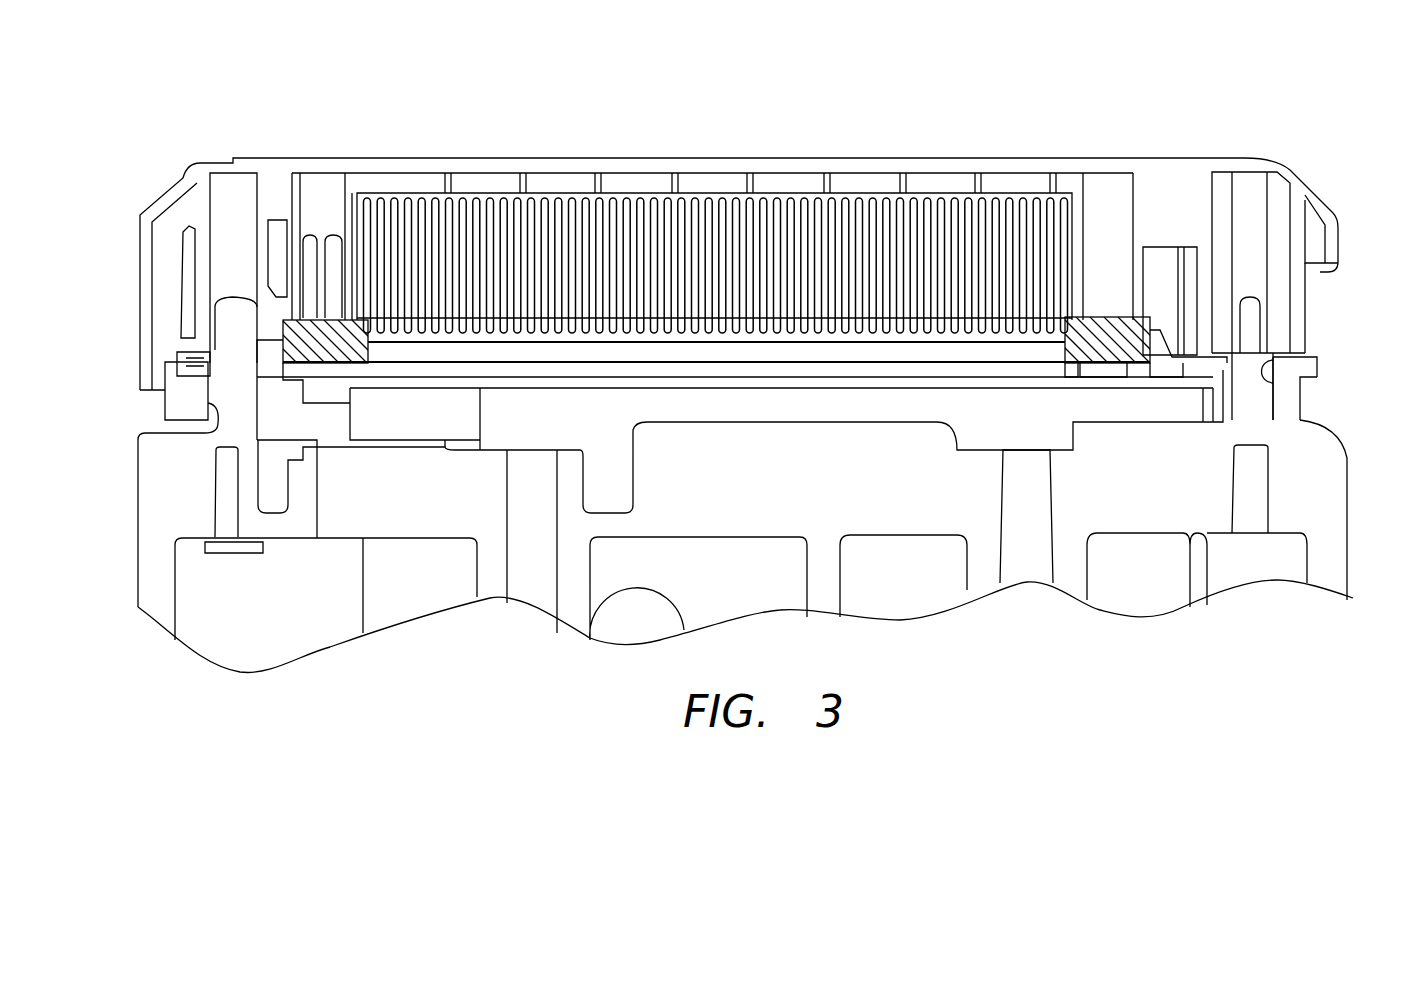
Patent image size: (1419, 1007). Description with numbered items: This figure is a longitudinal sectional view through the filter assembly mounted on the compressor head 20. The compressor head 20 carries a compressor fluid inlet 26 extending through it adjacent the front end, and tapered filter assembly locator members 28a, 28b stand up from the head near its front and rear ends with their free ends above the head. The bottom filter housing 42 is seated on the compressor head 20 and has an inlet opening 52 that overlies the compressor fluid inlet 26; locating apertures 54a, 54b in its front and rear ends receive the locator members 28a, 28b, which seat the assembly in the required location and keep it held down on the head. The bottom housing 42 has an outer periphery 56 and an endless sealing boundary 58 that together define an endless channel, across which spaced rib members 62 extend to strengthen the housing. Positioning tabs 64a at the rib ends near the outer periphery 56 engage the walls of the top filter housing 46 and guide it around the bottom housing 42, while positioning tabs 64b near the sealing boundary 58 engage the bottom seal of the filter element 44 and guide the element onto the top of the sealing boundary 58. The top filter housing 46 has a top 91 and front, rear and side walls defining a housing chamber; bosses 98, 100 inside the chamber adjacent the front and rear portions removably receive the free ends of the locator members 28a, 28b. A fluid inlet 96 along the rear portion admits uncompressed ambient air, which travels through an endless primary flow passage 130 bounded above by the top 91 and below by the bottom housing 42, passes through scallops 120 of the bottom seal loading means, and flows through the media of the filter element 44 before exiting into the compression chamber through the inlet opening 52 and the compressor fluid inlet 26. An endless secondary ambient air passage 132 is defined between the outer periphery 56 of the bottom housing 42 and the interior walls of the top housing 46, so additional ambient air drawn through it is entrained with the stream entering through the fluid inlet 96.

The compressor head 20 is at (147, 578).
The compressor fluid inlet 26 is at (322, 513).
The filter assembly locator member 28a is at (230, 307).
The filter assembly locator member 28b is at (1248, 303).
The bottom filter housing 42 is at (157, 407).
The filter element 44 is at (453, 346).
The top filter housing 46 is at (520, 145).
The inlet opening 52 is at (305, 400).
The locating aperture 54a is at (217, 420).
The locating aperture 54b is at (1293, 390).
The outer periphery 56 is at (1322, 372).
The endless sealing boundary 58 is at (1140, 372).
The rib member 62 is at (1227, 365).
The positioning tab 64a is at (190, 340).
The positioning tab 64b is at (325, 300).
The top 91 is at (866, 163).
The fluid inlet 96 is at (1328, 272).
The boss 98 is at (200, 186).
The boss 100 is at (1297, 198).
The scallop 120 is at (803, 180).
The primary flow passage 130 is at (277, 233).
The secondary ambient air passage 132 is at (160, 358).